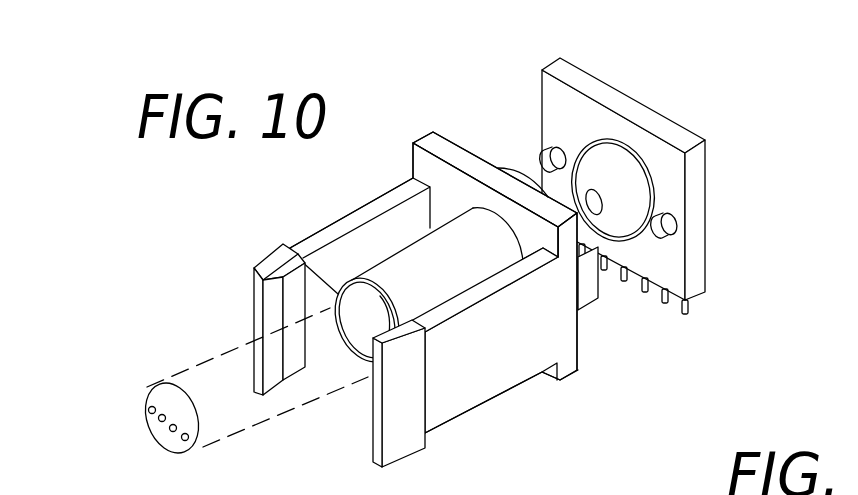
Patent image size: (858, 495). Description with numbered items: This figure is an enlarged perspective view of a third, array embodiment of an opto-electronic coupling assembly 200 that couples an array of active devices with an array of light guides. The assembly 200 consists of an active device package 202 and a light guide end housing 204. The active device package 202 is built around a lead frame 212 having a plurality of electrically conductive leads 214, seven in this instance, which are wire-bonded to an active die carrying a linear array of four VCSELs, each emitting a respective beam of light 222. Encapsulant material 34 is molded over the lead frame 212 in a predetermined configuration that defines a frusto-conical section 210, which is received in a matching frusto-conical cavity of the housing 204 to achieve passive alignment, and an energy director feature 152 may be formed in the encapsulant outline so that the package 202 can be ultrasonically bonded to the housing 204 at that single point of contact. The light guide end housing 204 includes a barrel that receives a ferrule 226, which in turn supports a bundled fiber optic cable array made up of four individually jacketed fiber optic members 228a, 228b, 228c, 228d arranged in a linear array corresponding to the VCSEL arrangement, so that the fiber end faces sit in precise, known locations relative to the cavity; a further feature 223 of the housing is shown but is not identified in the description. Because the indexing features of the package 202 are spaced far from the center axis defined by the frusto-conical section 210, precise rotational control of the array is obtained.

The encapsulant material 34 is at (591, 76).
The opto-electronic coupling assembly 200 is at (546, 237).
The active device package 202 is at (631, 183).
The light guide end housing 204 is at (426, 299).
The frusto-conical section 210 is at (628, 182).
The energy director feature 152 is at (657, 200).
The beams of light 222 is at (541, 157).
The electrically conductive leads 214 is at (624, 283).
The lead frame 212 is at (690, 316).
The ferrule receptacle bore 223 is at (347, 365).
The ferrule 226 is at (216, 360).
The fiber optic member 228a is at (148, 408).
The fiber optic member 228b is at (158, 418).
The fiber optic member 228c is at (170, 429).
The fiber optic member 228d is at (183, 439).